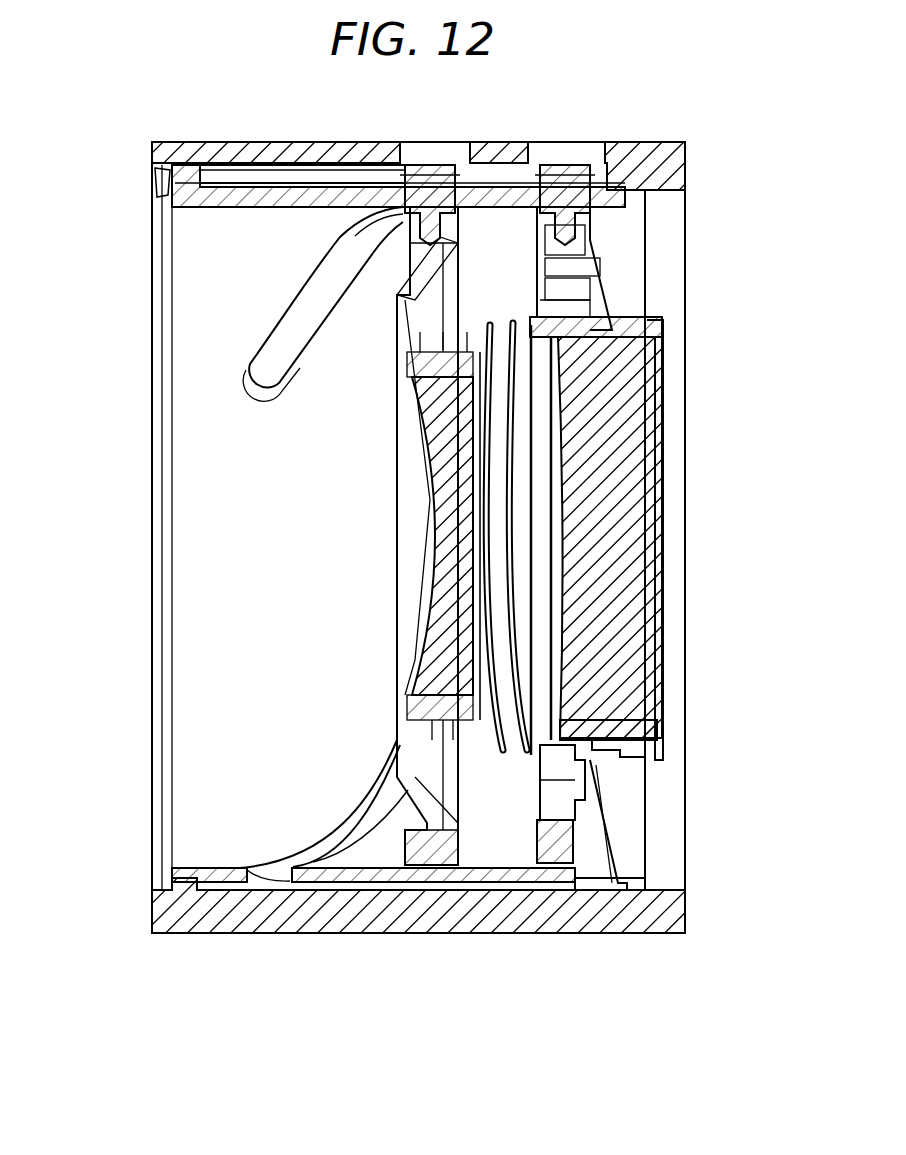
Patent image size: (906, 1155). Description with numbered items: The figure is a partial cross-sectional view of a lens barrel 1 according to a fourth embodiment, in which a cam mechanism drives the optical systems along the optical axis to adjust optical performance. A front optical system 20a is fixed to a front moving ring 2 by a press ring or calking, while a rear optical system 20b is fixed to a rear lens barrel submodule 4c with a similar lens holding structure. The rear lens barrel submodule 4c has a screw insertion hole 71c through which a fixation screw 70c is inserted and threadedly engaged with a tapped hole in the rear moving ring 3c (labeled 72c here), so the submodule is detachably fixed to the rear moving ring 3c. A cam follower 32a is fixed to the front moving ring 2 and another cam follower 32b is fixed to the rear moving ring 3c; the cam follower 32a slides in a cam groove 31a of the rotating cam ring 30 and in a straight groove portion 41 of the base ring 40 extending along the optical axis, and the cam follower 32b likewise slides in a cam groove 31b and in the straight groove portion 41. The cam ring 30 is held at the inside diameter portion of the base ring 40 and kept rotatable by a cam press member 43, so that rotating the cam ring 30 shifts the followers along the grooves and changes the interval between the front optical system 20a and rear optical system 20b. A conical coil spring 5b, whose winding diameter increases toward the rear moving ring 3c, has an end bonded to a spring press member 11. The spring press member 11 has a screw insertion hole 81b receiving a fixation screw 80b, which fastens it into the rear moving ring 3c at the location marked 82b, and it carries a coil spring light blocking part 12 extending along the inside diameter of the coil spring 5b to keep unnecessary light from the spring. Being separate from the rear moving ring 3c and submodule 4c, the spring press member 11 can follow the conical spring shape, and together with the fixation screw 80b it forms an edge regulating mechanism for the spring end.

The lens barrel 1 is at (102, 147).
The base ring 40 is at (222, 150).
The straight groove portion 41 is at (315, 175).
The cam follower 32a is at (425, 175).
The cam follower 32b is at (558, 175).
The cam press member 43 is at (156, 182).
The cam ring 30 is at (230, 200).
The engagement portion 72c is at (597, 232).
The screw insertion hole 71c is at (600, 255).
The fixation screw 70c is at (580, 285).
The front optical system 20a is at (440, 614).
The rear optical system 20b is at (650, 555).
The coil spring light blocking part 12 is at (575, 748).
The front moving ring 2 is at (405, 715).
The rear lens barrel submodule 4c is at (640, 757).
The spring press member 11 is at (580, 787).
The screw insertion hole 81b is at (598, 795).
The cam groove 31a is at (262, 875).
The coil spring 5b is at (412, 790).
The leaf spring 82b is at (517, 777).
The fixation screw 80b is at (538, 780).
The rear moving ring 3c is at (587, 853).
The cam groove 31b is at (603, 860).